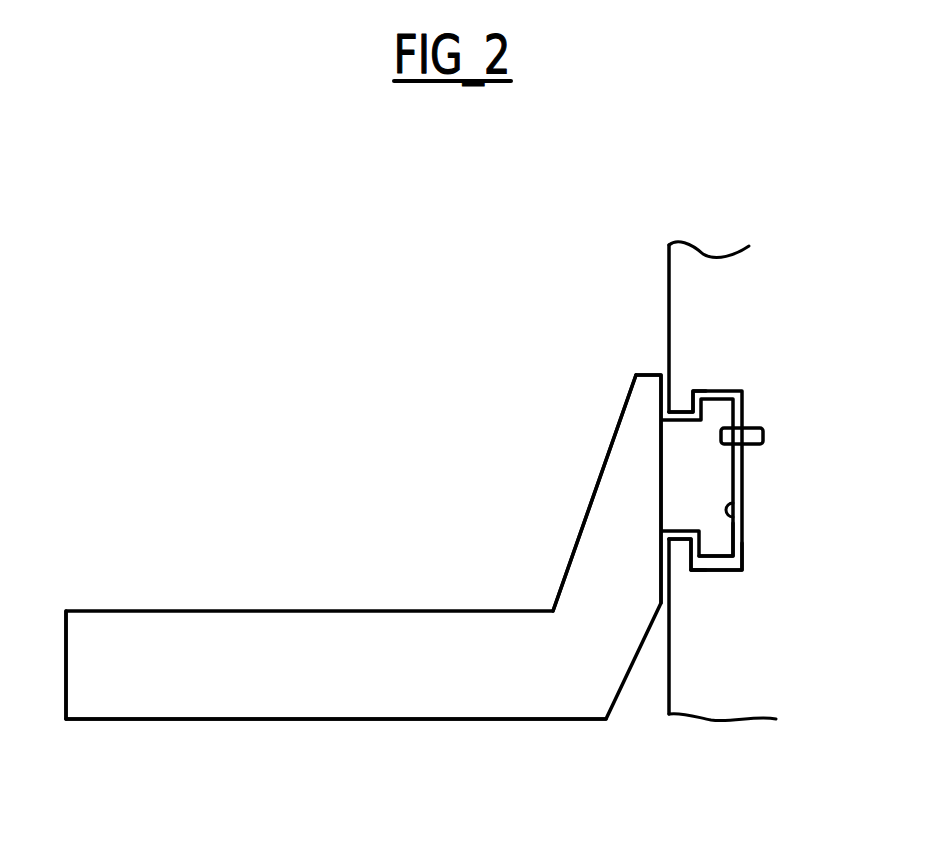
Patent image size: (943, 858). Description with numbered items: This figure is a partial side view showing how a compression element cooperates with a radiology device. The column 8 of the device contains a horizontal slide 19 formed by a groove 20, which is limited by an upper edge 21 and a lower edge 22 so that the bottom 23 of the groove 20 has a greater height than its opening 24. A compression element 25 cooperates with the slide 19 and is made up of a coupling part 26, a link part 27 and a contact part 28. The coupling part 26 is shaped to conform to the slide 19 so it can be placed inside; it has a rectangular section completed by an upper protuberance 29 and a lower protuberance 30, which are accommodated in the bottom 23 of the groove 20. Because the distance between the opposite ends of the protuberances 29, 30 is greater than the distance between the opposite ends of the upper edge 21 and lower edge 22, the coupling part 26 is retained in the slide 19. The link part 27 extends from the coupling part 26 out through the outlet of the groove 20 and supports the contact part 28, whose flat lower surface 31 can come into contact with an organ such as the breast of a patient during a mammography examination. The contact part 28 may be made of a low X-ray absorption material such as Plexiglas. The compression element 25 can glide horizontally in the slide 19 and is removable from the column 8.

The column 8 is at (667, 282).
The horizontal slide 19 is at (745, 481).
The groove 20 is at (727, 575).
The upper edge 21 is at (681, 402).
The lower edge 22 is at (680, 553).
The bottom of the groove 23 is at (744, 521).
The opening of the groove 24 is at (701, 485).
The compression element 25 is at (476, 717).
The coupling part 26 is at (683, 440).
The link part 27 is at (602, 514).
The contact part 28 is at (382, 623).
The upper protuberance 29 is at (713, 408).
The lower protuberance 30 is at (744, 544).
The flat lower surface 31 is at (222, 718).